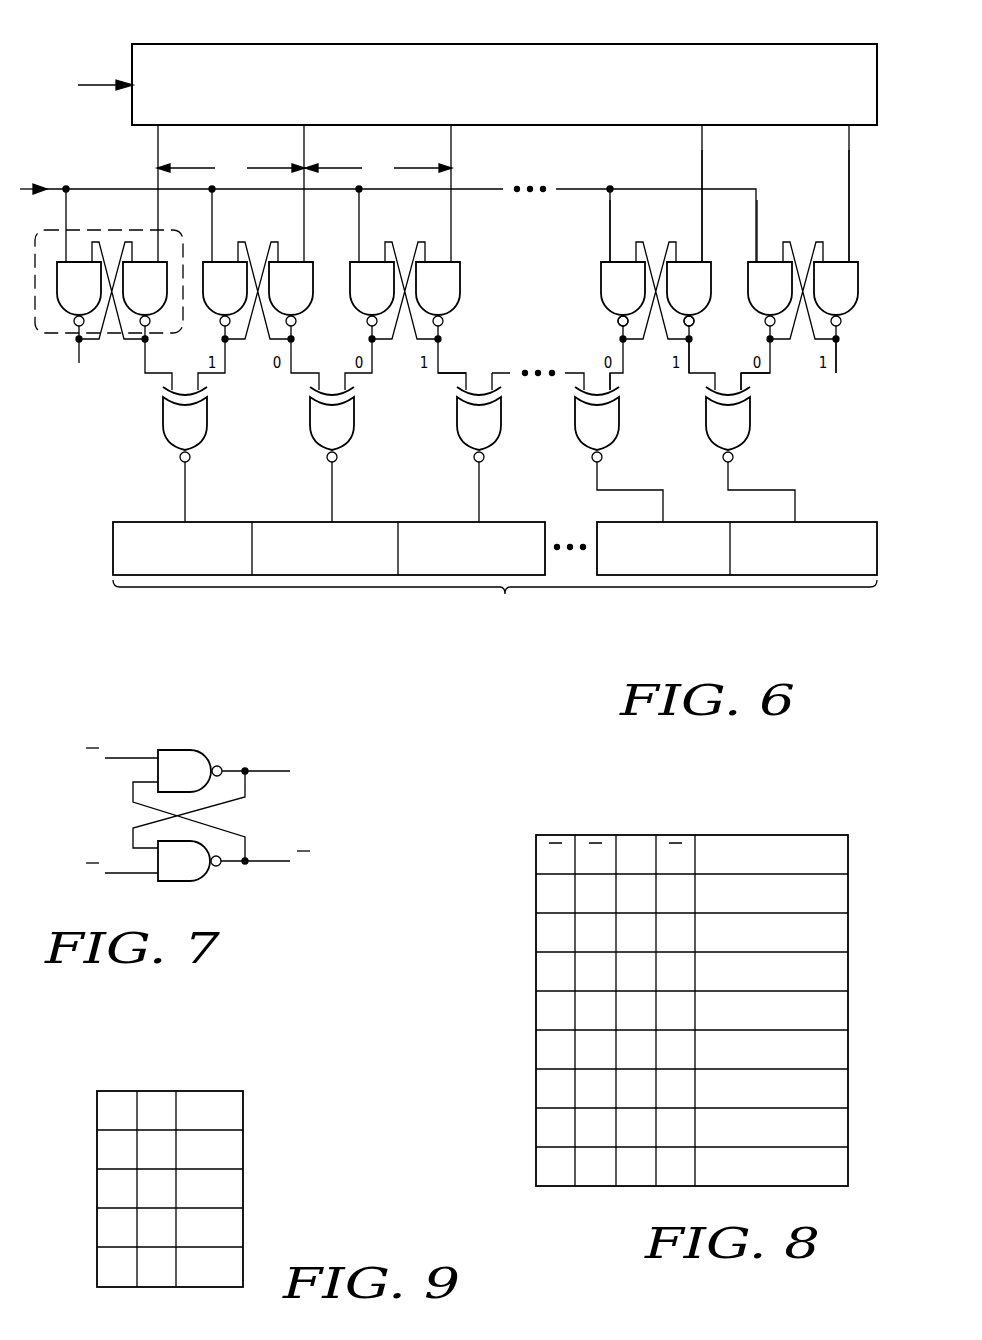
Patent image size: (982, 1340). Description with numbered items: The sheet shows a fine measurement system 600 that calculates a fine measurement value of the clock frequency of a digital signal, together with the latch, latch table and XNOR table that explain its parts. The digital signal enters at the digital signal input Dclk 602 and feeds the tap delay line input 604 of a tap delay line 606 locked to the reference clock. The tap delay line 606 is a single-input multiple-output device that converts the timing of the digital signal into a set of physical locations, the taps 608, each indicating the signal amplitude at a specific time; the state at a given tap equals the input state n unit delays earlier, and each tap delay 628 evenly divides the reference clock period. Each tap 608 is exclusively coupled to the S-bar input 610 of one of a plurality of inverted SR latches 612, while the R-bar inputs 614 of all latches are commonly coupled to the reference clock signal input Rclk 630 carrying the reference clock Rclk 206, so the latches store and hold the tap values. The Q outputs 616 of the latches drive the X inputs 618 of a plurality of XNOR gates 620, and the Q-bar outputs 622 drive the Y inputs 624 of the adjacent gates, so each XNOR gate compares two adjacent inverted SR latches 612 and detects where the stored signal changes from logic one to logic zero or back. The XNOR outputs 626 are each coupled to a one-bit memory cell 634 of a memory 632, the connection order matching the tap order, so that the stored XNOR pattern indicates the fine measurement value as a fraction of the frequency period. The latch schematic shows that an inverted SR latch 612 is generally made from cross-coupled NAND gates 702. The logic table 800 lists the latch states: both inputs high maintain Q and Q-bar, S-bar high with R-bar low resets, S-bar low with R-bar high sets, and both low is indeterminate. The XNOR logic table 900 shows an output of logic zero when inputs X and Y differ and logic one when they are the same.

In FIG. 6, the reference clock Rclk 206 is at (35, 189).
In FIG. 6, the fine measurement system 600 is at (755, 644).
In FIG. 6, the digital signal input Dclk 602 is at (100, 87).
In FIG. 6, the tap delay line input 604 is at (131, 82).
In FIG. 6, the tap delay line 606 is at (540, 44).
In FIG. 6, the taps 608 is at (159, 128).
In FIG. 6, the S-bar inputs 610 is at (703, 166).
In FIG. 6, the inverted SR latches 612 is at (50, 333).
In FIG. 6, the R-bar inputs 614 is at (757, 198).
In FIG. 6, the Q outputs 616 is at (690, 356).
In FIG. 6, the X inputs 618 is at (454, 375).
In FIG. 6, the XNOR gates 620 is at (208, 412).
In FIG. 6, the Q-bar outputs 622 is at (617, 322).
In FIG. 6, the Y inputs 624 is at (612, 378).
In FIG. 6, the XNOR gate outputs 626 is at (184, 483).
In FIG. 6, the tap delay 628 is at (304, 167).
In FIG. 6, the reference clock signal input Rclk 630 is at (52, 186).
In FIG. 6, the memory 632 is at (113, 552).
In FIG. 6, the 1-bit memory cells 634 is at (495, 598).
In FIG. 7, the NAND gates 702 is at (203, 752).
In FIG. 8, the SR latch truth table 800 is at (775, 835).
In FIG. 9, the XNOR truth table 900 is at (190, 1090).